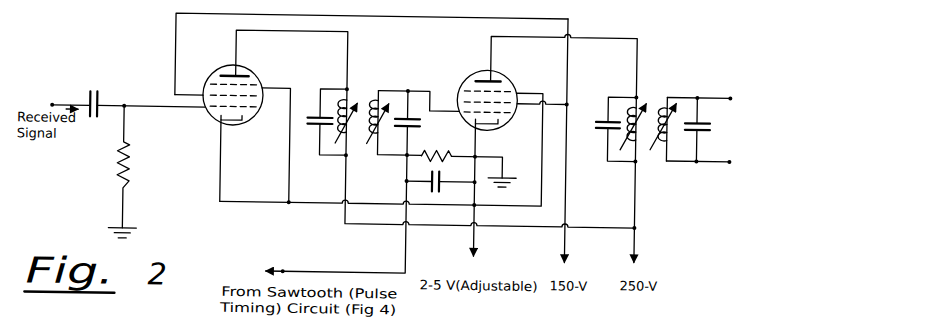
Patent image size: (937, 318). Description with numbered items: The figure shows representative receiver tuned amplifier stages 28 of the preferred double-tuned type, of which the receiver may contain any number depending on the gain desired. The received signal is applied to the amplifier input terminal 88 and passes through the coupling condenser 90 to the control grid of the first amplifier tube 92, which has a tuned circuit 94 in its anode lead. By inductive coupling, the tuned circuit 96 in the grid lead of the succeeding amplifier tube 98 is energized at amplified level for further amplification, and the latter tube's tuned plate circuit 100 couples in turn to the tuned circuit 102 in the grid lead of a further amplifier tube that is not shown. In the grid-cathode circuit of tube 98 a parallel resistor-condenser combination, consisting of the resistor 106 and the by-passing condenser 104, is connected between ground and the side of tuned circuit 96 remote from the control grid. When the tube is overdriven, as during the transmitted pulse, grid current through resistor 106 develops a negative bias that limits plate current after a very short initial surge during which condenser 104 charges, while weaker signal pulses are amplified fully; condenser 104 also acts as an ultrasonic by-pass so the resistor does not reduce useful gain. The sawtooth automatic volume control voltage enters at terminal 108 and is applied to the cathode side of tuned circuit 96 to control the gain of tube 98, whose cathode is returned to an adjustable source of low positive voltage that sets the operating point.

The receiver tuned amplifier stages 28 is at (294, 52).
The amplifier input terminal 88 is at (52, 110).
The coupling condenser 90 is at (100, 101).
The first amplifier tube 92 is at (255, 79).
The tuned circuit 94 is at (333, 158).
The tuned circuit 96 is at (395, 156).
The succeeding amplifier tube 98 is at (514, 78).
The tuned plate circuit 100 is at (623, 155).
The tuned circuit 102 is at (685, 154).
The by-passing condenser 104 is at (440, 180).
The resistor 106 is at (426, 152).
The terminal 108 is at (292, 272).